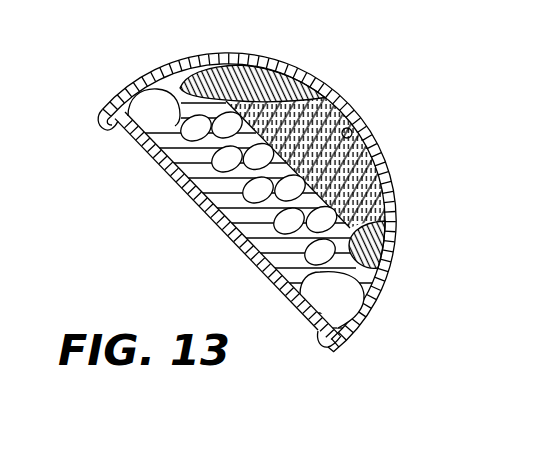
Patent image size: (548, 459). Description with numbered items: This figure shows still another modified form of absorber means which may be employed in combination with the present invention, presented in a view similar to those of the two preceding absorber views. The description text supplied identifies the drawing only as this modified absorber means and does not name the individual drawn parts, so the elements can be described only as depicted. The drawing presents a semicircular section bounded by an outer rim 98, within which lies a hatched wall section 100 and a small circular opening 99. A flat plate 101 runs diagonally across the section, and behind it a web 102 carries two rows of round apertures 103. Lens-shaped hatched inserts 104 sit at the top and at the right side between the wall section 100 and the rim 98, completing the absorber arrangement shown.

The end wall rim 98 is at (333, 99).
The opening 99 is at (352, 132).
The wall section 100 is at (360, 178).
The plate 101 is at (243, 250).
The web 102 is at (227, 197).
The apertures 103 is at (197, 128).
The seal 104 is at (228, 121).